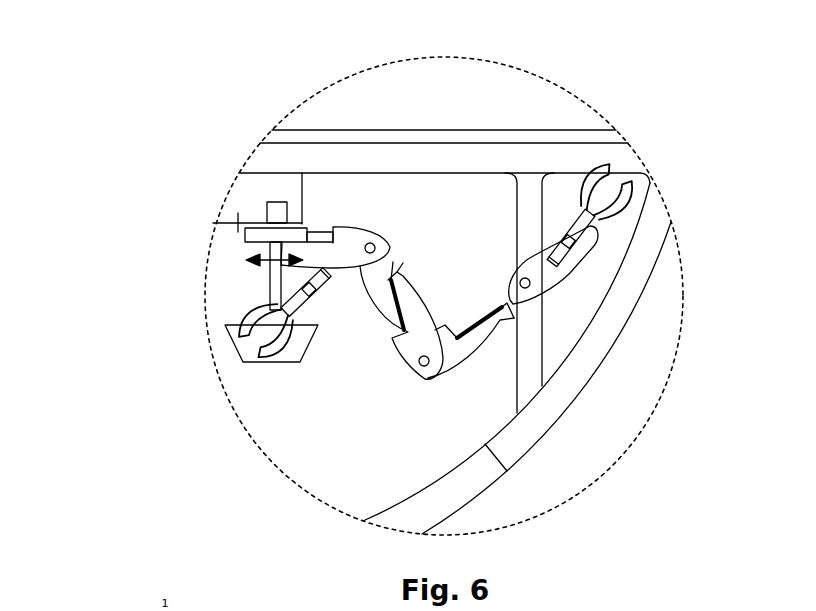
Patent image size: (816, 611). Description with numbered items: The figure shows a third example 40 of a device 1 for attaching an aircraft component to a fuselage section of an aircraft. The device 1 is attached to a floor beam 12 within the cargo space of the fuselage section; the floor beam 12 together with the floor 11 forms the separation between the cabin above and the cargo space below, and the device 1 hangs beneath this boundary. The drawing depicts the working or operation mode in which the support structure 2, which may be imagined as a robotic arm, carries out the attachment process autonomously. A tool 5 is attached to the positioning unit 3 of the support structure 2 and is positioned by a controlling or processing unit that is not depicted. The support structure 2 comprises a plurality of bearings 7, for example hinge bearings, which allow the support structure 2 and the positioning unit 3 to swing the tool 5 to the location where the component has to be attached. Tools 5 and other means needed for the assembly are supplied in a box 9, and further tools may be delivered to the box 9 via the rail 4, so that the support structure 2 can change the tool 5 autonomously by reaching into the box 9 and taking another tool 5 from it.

The third example 40 is at (152, 92).
The device 1 is at (205, 183).
The support structure 2 is at (358, 382).
The positioning unit 3 is at (467, 358).
The rail 4 is at (238, 233).
The tool 5 is at (316, 312).
The bearings 7 is at (380, 242).
The box 9 is at (242, 360).
The floor 11 is at (541, 110).
The floor beam 12 is at (335, 162).